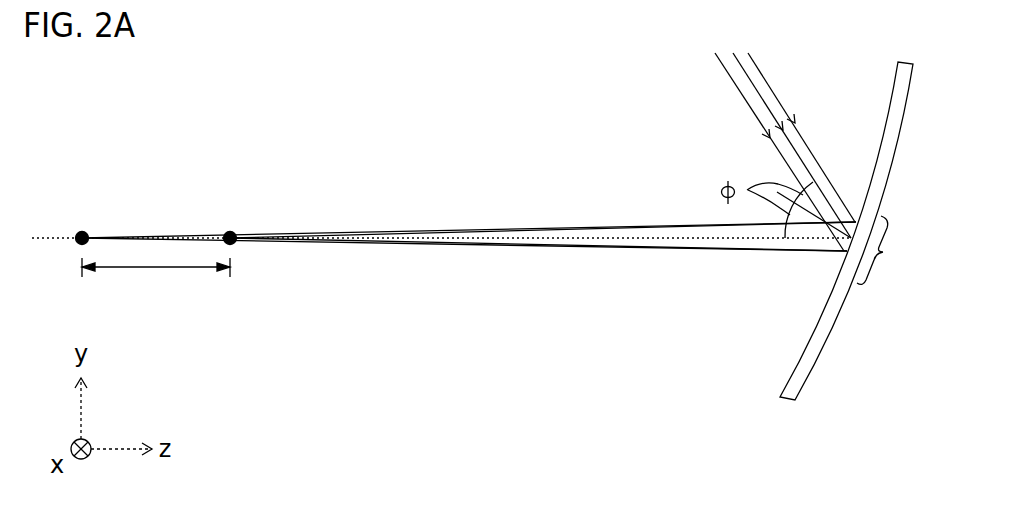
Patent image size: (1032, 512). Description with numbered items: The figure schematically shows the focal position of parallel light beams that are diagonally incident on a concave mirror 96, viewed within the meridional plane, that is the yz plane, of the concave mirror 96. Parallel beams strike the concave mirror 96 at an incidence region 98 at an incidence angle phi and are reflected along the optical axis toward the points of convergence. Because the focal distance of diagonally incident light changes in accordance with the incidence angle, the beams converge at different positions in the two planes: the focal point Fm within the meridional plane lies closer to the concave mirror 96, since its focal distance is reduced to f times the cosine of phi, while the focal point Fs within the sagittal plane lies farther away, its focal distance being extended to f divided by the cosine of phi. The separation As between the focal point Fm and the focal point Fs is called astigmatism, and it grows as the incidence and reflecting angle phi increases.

The concave mirror 96 is at (783, 380).
The incident region of mirror 98 is at (891, 250).
The focal point within the sagittal plane Fs is at (83, 231).
The focal point within the meridional plane Fm is at (230, 231).
The astigmatism As is at (156, 284).